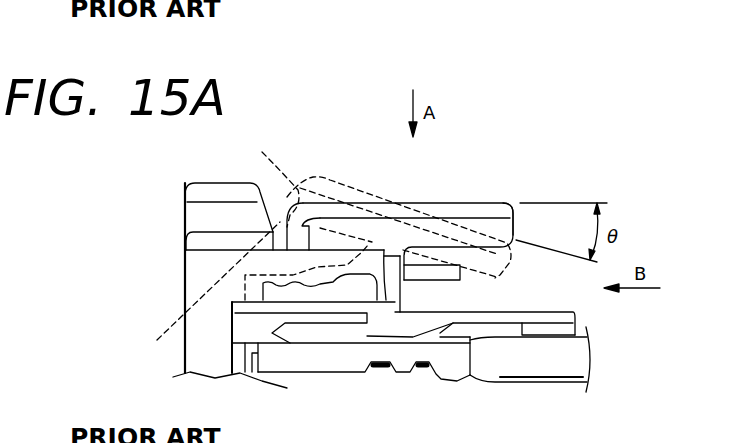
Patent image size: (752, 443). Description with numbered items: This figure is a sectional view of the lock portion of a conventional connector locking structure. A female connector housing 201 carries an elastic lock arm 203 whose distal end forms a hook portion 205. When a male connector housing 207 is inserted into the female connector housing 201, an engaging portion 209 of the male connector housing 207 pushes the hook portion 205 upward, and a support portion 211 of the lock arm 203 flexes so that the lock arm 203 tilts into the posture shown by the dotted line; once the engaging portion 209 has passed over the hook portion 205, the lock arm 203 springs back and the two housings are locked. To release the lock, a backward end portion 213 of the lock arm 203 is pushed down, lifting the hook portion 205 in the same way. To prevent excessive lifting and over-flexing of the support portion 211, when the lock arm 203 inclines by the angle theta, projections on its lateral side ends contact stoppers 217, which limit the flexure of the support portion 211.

The female connector housing 201 is at (518, 335).
The lock arm 203 is at (440, 201).
The hook portion 205 is at (283, 222).
The male connector housing 207 is at (166, 320).
The engaging portion 209 is at (305, 250).
The support portion 211 is at (384, 332).
The backward end portion 213 is at (470, 228).
The stoppers 217 is at (460, 279).